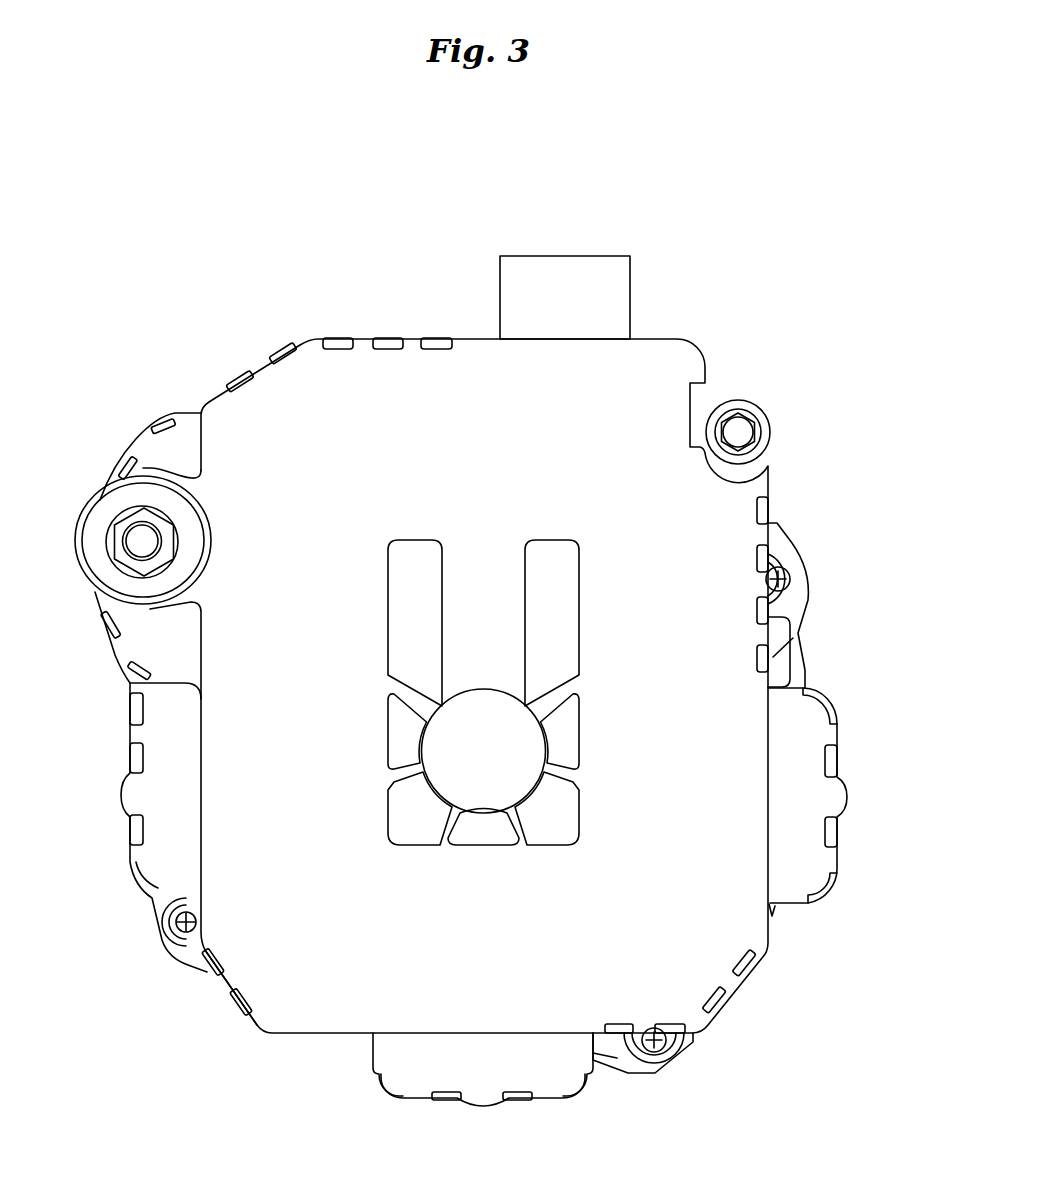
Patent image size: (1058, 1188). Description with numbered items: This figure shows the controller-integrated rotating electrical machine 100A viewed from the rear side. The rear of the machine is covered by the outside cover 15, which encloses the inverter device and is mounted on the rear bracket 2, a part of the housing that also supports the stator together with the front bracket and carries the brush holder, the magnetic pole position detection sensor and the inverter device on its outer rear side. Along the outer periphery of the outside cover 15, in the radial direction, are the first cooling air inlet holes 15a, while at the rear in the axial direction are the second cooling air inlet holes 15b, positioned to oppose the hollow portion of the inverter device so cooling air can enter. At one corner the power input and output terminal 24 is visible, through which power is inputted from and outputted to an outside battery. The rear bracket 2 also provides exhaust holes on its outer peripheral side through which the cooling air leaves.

The controller-integrated rotating electrical machine 100A is at (774, 1152).
The outside cover 15 is at (313, 368).
The first cooling air inlet holes 15a is at (257, 1000).
The second cooling air inlet holes 15b is at (415, 822).
The power input and output terminal 24 is at (132, 538).
The rear bracket 2 is at (783, 665).